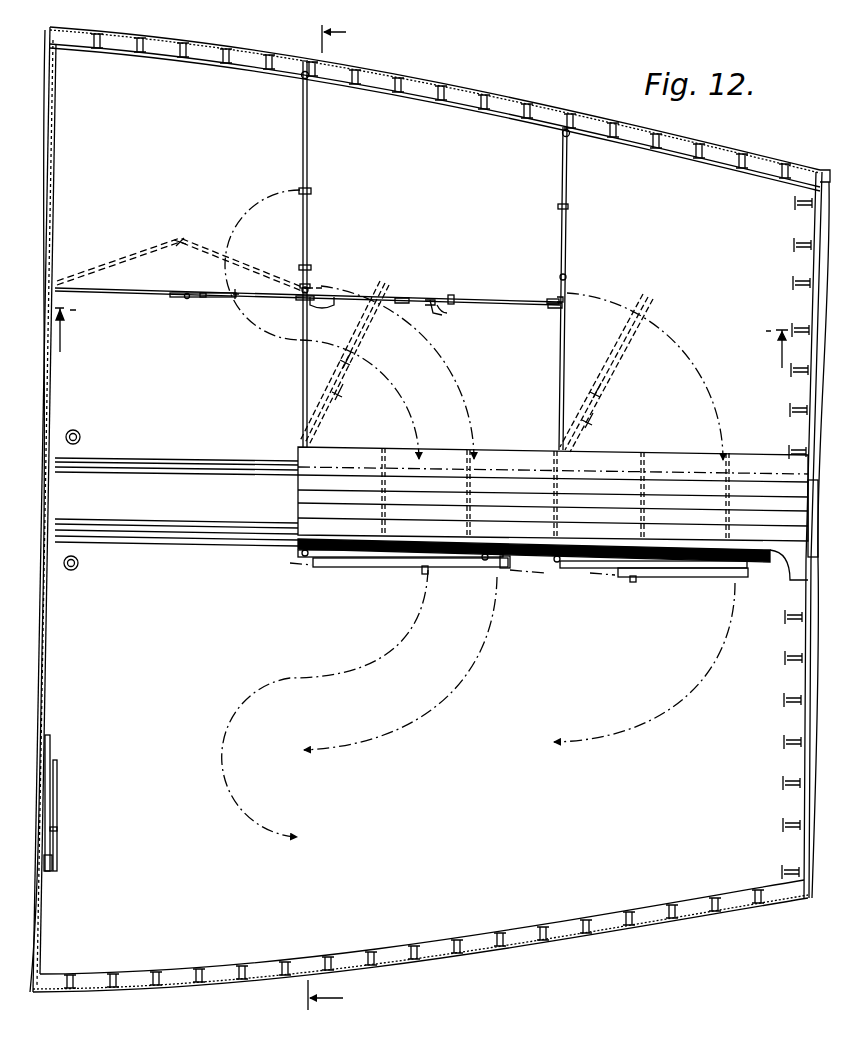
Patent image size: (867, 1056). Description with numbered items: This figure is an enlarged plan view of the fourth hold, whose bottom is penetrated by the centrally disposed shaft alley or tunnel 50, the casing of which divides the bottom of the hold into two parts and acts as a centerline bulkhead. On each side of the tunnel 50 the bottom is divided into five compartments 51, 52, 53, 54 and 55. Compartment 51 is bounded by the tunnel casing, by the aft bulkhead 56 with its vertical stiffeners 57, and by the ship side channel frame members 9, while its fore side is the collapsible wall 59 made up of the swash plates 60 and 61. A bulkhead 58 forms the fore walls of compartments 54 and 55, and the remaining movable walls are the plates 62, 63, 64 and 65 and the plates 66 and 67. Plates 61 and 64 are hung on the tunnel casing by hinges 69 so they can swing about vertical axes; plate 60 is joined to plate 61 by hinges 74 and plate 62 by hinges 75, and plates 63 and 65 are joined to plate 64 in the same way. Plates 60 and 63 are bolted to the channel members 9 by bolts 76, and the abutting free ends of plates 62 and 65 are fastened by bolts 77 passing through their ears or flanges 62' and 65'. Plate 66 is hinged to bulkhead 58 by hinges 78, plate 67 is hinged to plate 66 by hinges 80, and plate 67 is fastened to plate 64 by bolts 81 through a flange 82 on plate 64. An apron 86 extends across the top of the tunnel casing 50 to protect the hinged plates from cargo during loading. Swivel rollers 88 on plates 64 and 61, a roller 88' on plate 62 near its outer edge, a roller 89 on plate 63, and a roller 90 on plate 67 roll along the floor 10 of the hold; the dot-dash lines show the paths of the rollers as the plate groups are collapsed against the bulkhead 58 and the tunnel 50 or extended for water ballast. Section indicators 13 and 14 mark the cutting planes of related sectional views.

The channel frame members 9 is at (190, 45).
The floor of the hold 10 is at (430, 145).
The section line 13 is at (421, 338).
The section line 14 is at (313, 515).
The shaft alley or tunnel 50 is at (130, 460).
The compartment 51 is at (678, 294).
The compartment 52 is at (420, 222).
The compartment 53 is at (485, 396).
The compartment 54 is at (155, 170).
The compartment 55 is at (151, 379).
The bulkhead 56 is at (813, 268).
The vertical stiffeners 57 is at (798, 414).
The bulkhead 58 is at (58, 197).
The collapsible or removable wall 59 is at (568, 243).
The swash plate 60 is at (563, 133).
The swash plate 61 is at (563, 347).
The swash plate 62 is at (538, 314).
The ears or flanges 62' is at (460, 328).
The swash plate 63 is at (304, 86).
The swash plate 64 is at (309, 341).
The swash plate 65 is at (416, 286).
The ears or flanges 65' is at (417, 326).
The swash plate 66 is at (132, 291).
The swash plate 67 is at (213, 293).
The hinges 69 is at (300, 450).
The hinge 74 is at (300, 267).
The hinge 75 is at (328, 300).
The bolts 76 is at (302, 78).
The bolts 77 is at (438, 311).
The hinges 78 is at (57, 286).
The hinges 80 is at (183, 298).
The bolts 81 is at (302, 289).
The ears or flange 82 is at (300, 302).
The apron 86 is at (350, 452).
The swivel roller or castor 88 is at (453, 282).
The latch pin 88' is at (476, 288).
The supporting roller 89 is at (302, 190).
The roller 90 is at (237, 300).